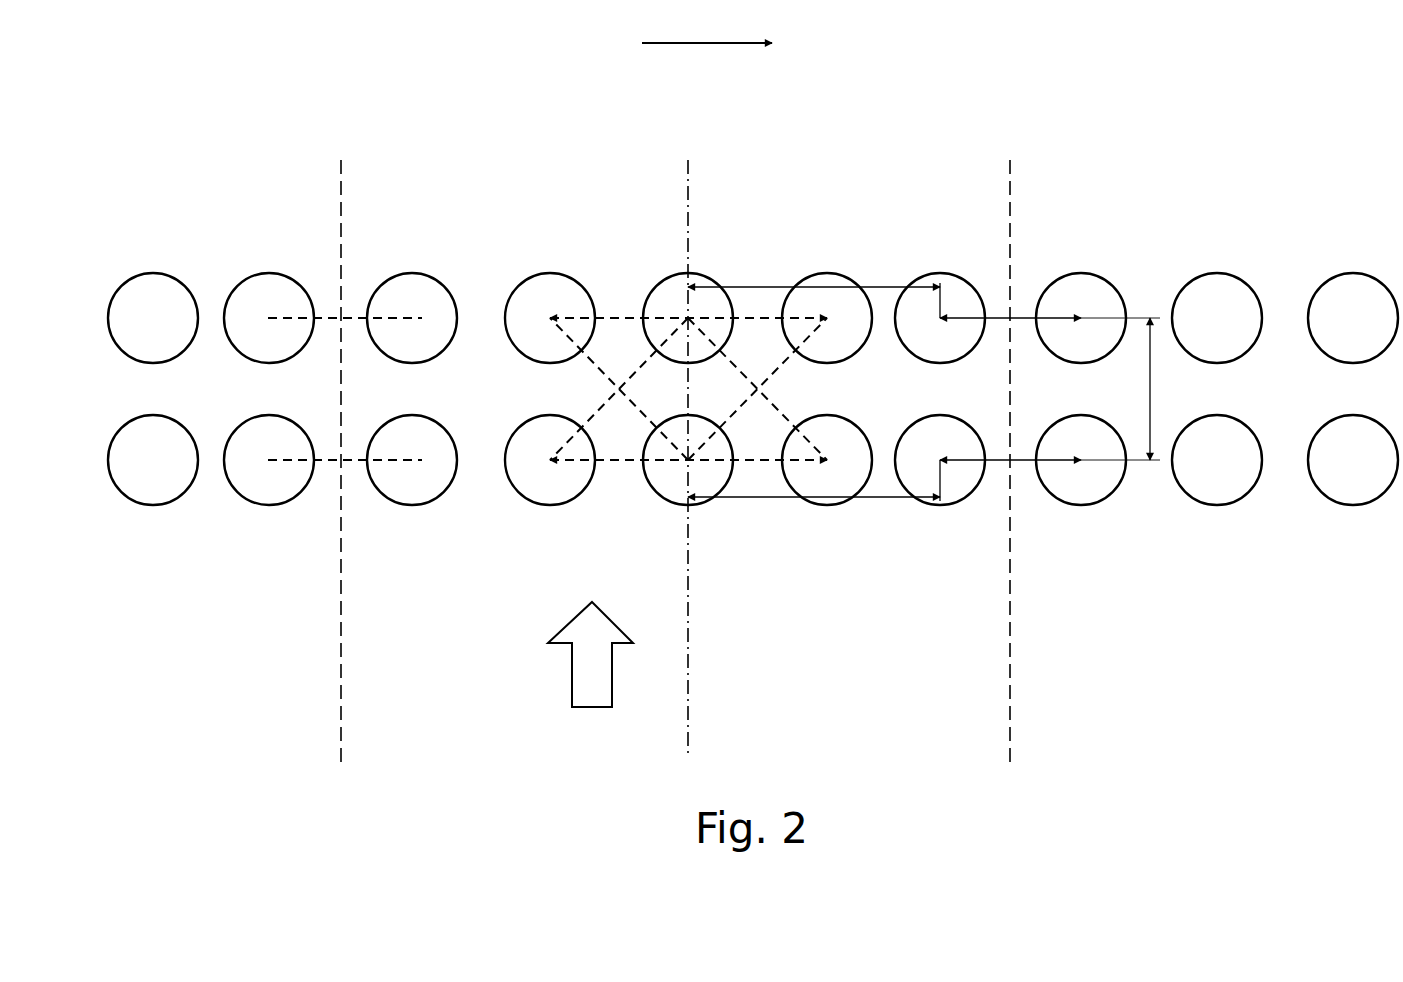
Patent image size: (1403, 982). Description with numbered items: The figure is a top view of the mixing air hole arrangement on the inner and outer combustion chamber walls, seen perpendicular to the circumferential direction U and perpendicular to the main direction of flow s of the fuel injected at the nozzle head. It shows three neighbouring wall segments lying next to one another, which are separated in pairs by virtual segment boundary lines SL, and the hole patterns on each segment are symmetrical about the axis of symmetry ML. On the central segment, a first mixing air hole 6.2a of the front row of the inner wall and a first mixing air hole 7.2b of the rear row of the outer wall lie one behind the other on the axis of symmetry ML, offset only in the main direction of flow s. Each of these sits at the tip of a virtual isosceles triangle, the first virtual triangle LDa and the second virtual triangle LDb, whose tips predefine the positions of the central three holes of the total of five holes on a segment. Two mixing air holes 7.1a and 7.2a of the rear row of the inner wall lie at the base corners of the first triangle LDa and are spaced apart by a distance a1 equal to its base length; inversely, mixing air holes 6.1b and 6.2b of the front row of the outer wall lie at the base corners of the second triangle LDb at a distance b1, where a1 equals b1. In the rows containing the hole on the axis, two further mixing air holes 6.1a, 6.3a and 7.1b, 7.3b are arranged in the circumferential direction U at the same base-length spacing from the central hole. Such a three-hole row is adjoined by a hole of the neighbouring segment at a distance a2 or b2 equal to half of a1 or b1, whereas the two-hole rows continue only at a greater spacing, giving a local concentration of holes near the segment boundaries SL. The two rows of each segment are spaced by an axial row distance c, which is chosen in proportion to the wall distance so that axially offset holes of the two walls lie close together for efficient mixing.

The mixing air hole 7.1b is at (415, 273).
The mixing air hole 7.1a is at (549, 273).
The first mixing air hole 7.2b is at (696, 273).
The mixing air hole 7.2a is at (828, 270).
The mixing air hole 7.3b is at (940, 273).
The mixing air hole 6.1a is at (423, 503).
The mixing air hole 6.1b is at (550, 503).
The first mixing air hole 6.2a is at (690, 503).
The mixing air hole 6.2b is at (828, 508).
The mixing air hole 6.3a is at (940, 503).
The segment boundary line SL is at (342, 181).
The axis of symmetry ML is at (689, 181).
The first virtual isosceles triangle LDa is at (624, 312).
The second virtual isosceles triangle LDb is at (753, 461).
The distance b1 is at (814, 290).
The distance b2 is at (1022, 318).
The distance a1 is at (814, 480).
The distance a2 is at (1015, 463).
The axial row distance c is at (1157, 389).
The circumferential direction U is at (707, 30).
The main direction of flow s is at (590, 654).